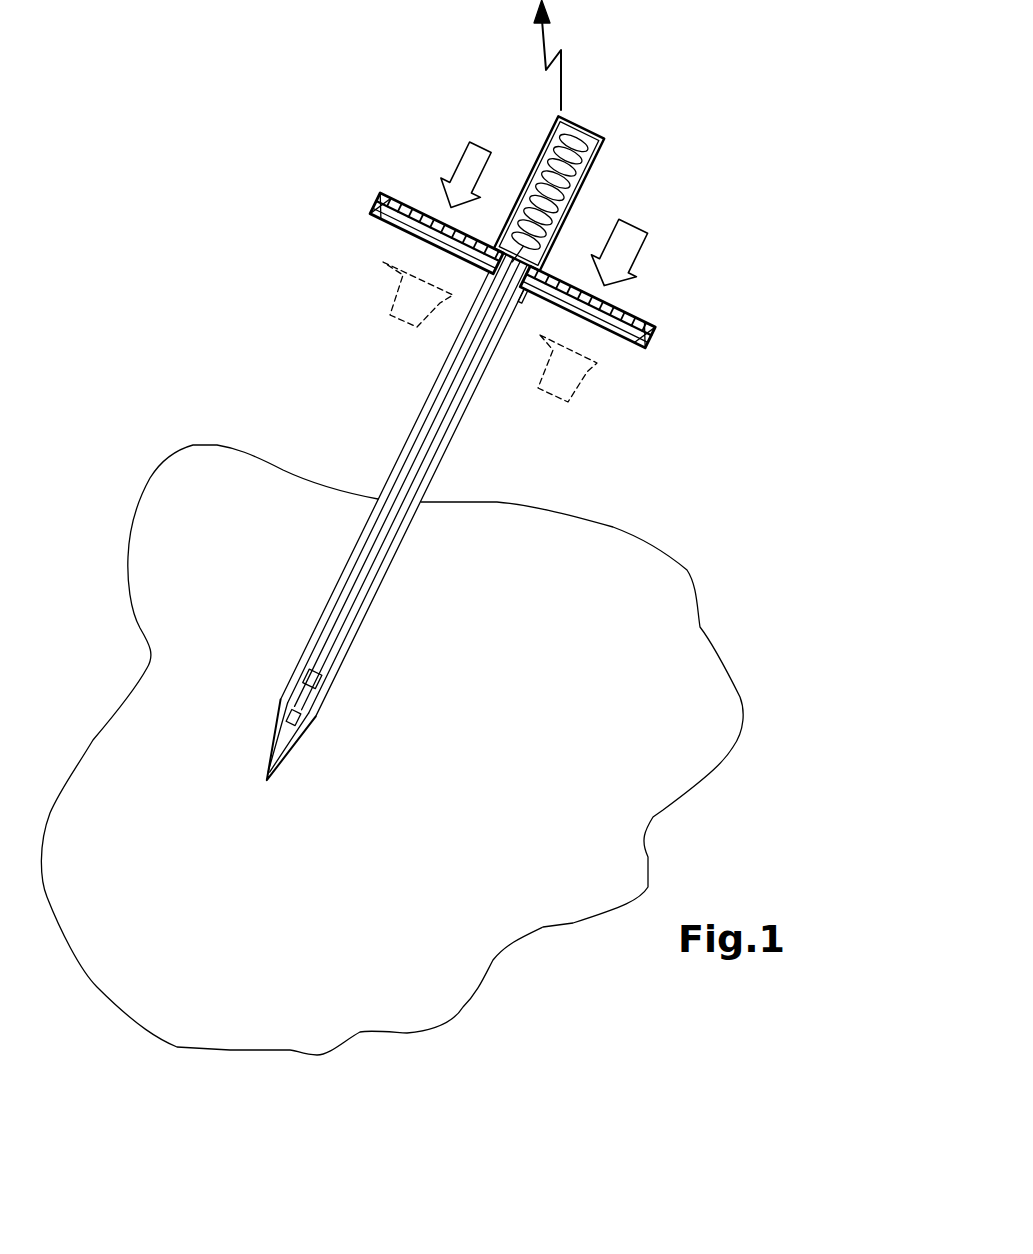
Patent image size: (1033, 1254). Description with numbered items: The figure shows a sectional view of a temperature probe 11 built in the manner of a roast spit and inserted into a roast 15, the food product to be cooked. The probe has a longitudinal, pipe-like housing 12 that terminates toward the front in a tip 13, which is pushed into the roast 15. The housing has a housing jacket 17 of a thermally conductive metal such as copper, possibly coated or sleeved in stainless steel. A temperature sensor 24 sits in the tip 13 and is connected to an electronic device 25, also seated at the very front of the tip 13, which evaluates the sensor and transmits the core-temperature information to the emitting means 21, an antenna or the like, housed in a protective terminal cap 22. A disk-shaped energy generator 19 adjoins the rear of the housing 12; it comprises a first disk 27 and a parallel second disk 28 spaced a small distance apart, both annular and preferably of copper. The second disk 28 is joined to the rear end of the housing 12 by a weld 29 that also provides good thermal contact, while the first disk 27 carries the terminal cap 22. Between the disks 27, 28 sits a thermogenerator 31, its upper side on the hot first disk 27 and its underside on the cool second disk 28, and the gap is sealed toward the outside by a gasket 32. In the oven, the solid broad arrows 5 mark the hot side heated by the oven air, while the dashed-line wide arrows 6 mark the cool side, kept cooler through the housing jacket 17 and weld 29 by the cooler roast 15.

The solid broad arrows 5 is at (490, 149).
The dashed-line wide arrows 6 is at (392, 318).
The temperature probe 11 is at (694, 75).
The housing 12 is at (367, 352).
The tip 13 is at (268, 741).
The roast 15 is at (508, 702).
The housing jacket 17 is at (408, 455).
The energy generator 19 is at (336, 155).
The emitting means 21 is at (584, 170).
The terminal cap 22 is at (603, 153).
The temperature sensor 24 is at (310, 722).
The electronic device 25 is at (327, 697).
The first disk 27 is at (656, 329).
The second disk 28 is at (643, 350).
The weld 29 is at (524, 302).
The thermogenerator 31 is at (417, 221).
The gasket 32 is at (371, 204).